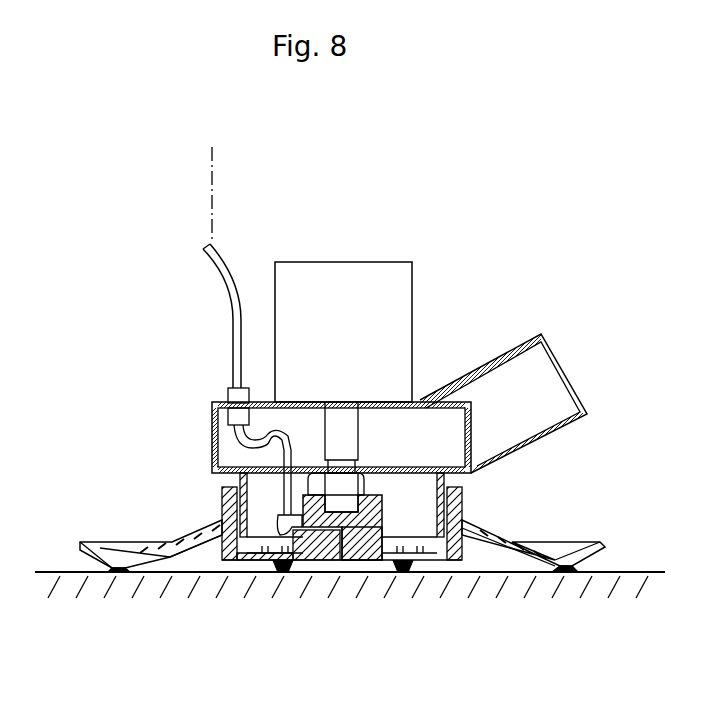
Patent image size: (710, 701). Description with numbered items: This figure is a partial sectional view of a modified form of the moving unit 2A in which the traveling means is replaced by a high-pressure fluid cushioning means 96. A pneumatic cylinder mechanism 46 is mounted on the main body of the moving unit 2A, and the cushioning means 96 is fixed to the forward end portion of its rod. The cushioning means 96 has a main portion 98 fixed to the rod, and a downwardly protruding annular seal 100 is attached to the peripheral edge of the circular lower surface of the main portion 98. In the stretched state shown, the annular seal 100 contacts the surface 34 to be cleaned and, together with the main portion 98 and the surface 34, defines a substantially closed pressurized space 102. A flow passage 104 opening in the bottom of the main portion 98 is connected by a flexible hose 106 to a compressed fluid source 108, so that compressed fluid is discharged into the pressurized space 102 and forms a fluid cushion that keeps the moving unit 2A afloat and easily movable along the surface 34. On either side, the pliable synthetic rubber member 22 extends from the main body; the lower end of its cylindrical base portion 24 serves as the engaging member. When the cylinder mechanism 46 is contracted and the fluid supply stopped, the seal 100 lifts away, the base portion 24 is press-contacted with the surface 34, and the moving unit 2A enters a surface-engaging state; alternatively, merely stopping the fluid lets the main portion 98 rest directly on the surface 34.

The moving unit 2A is at (448, 296).
The member 22 is at (178, 520).
The cylindrical base portion 24 is at (225, 545).
The surface 34 is at (625, 574).
The pneumatic cylinder mechanism 46 is at (352, 258).
The high-pressure fluid cushioning means 96 is at (392, 504).
The main portion 98 is at (383, 530).
The annular seal 100 is at (284, 565).
The pressurized space 102 is at (377, 566).
The flow passage 104 is at (328, 565).
The flexible hose 106 is at (222, 273).
The compressed fluid source 108 is at (201, 133).